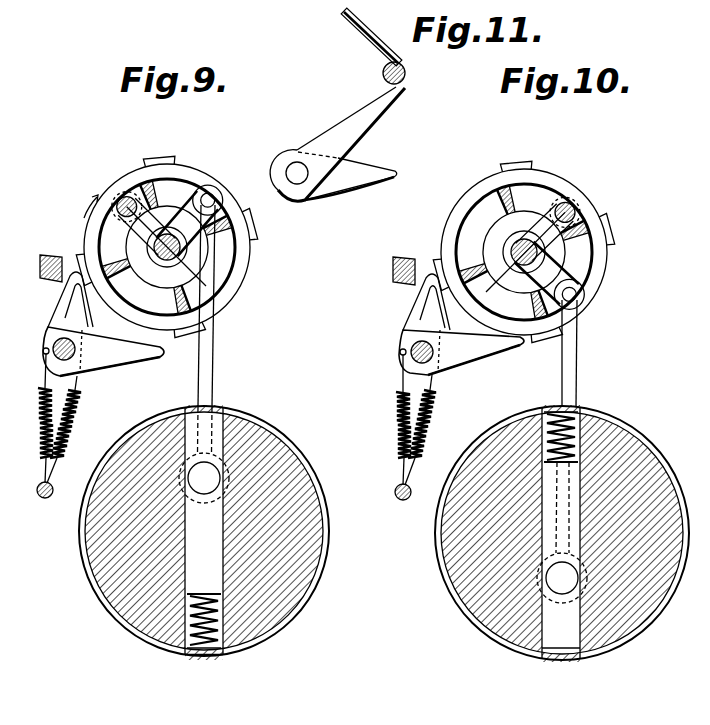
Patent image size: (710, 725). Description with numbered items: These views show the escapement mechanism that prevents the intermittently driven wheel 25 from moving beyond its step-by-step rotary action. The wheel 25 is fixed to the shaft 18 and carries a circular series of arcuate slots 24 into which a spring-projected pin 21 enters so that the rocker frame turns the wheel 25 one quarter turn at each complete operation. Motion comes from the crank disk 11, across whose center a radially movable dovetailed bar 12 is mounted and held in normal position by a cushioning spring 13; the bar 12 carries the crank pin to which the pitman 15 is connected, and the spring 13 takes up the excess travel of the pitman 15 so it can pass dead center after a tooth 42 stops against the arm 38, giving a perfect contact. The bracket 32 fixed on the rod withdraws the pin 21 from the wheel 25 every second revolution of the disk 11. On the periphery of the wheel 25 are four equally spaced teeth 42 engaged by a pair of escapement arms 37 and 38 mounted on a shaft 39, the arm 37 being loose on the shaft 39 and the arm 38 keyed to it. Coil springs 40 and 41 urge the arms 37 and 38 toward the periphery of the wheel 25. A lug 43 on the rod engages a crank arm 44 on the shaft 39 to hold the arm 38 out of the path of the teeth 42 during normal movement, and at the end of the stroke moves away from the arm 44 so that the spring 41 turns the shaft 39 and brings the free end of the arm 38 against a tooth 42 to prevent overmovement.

In FIG. 9, the crank disk 11 is at (305, 582).
In FIG. 10, the crank disk 11 is at (468, 565).
In FIG. 9, the dovetailed bar 12 is at (204, 531).
In FIG. 10, the dovetailed bar 12 is at (561, 533).
In FIG. 9, the cushioning spring 13 is at (214, 650).
In FIG. 10, the cushioning spring 13 is at (576, 411).
In FIG. 9, the pitman 15 is at (212, 360).
In FIG. 10, the pitman 15 is at (577, 364).
In FIG. 9, the shaft 18 is at (165, 272).
In FIG. 10, the shaft 18 is at (537, 228).
In FIG. 9, the pin 21 is at (121, 197).
In FIG. 10, the pin 21 is at (577, 212).
In FIG. 9, the slots 24 is at (190, 186).
In FIG. 10, the slots 24 is at (538, 188).
In FIG. 9, the wheel 25 is at (241, 284).
In FIG. 10, the wheel 25 is at (602, 262).
In FIG. 11, the bracket 32 is at (362, 29).
In FIG. 9, the escapement arm 37 is at (65, 302).
In FIG. 10, the escapement arm 37 is at (418, 311).
In FIG. 9, the escapement arm 38 is at (128, 355).
In FIG. 10, the escapement arm 38 is at (490, 352).
In FIG. 11, the escapement arm 38 is at (366, 190).
In FIG. 9, the shaft 39 is at (56, 348).
In FIG. 10, the shaft 39 is at (412, 352).
In FIG. 9, the coil spring 40 is at (80, 423).
In FIG. 10, the coil spring 40 is at (434, 425).
In FIG. 9, the coil spring 41 is at (38, 421).
In FIG. 10, the coil spring 41 is at (394, 420).
In FIG. 9, the teeth 42 is at (160, 166).
In FIG. 10, the teeth 42 is at (510, 165).
In FIG. 11, the lug 43 is at (383, 80).
In FIG. 11, the crank arm 44 is at (330, 130).